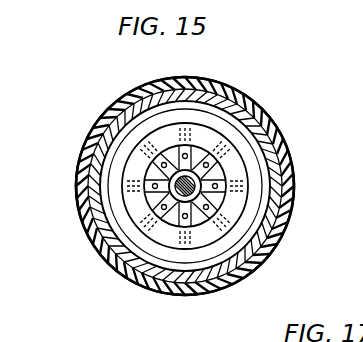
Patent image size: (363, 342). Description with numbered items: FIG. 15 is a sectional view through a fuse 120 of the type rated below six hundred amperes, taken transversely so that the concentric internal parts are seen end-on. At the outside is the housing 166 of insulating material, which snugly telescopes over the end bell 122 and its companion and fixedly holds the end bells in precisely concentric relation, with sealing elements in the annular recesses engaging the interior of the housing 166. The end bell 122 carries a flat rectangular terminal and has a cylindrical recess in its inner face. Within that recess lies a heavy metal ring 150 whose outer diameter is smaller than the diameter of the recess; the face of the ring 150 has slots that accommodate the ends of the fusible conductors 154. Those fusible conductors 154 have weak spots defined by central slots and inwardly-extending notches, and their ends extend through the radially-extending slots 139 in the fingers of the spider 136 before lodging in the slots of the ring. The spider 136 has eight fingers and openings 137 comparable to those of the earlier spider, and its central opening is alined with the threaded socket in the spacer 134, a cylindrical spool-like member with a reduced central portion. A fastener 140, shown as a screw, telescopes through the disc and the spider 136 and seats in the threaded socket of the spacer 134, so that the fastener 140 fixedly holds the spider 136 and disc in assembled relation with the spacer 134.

The fuse 120 is at (334, 73).
The end bell 122 is at (257, 125).
The spacer 134 is at (112, 211).
The spider 136 is at (163, 152).
The openings 137 is at (187, 143).
The radially-extending slots 139 is at (108, 110).
The fastener 140 is at (238, 96).
The heavy metal ring 150 is at (283, 162).
The fusible conductors 154 is at (128, 192).
The housing 166 is at (283, 193).